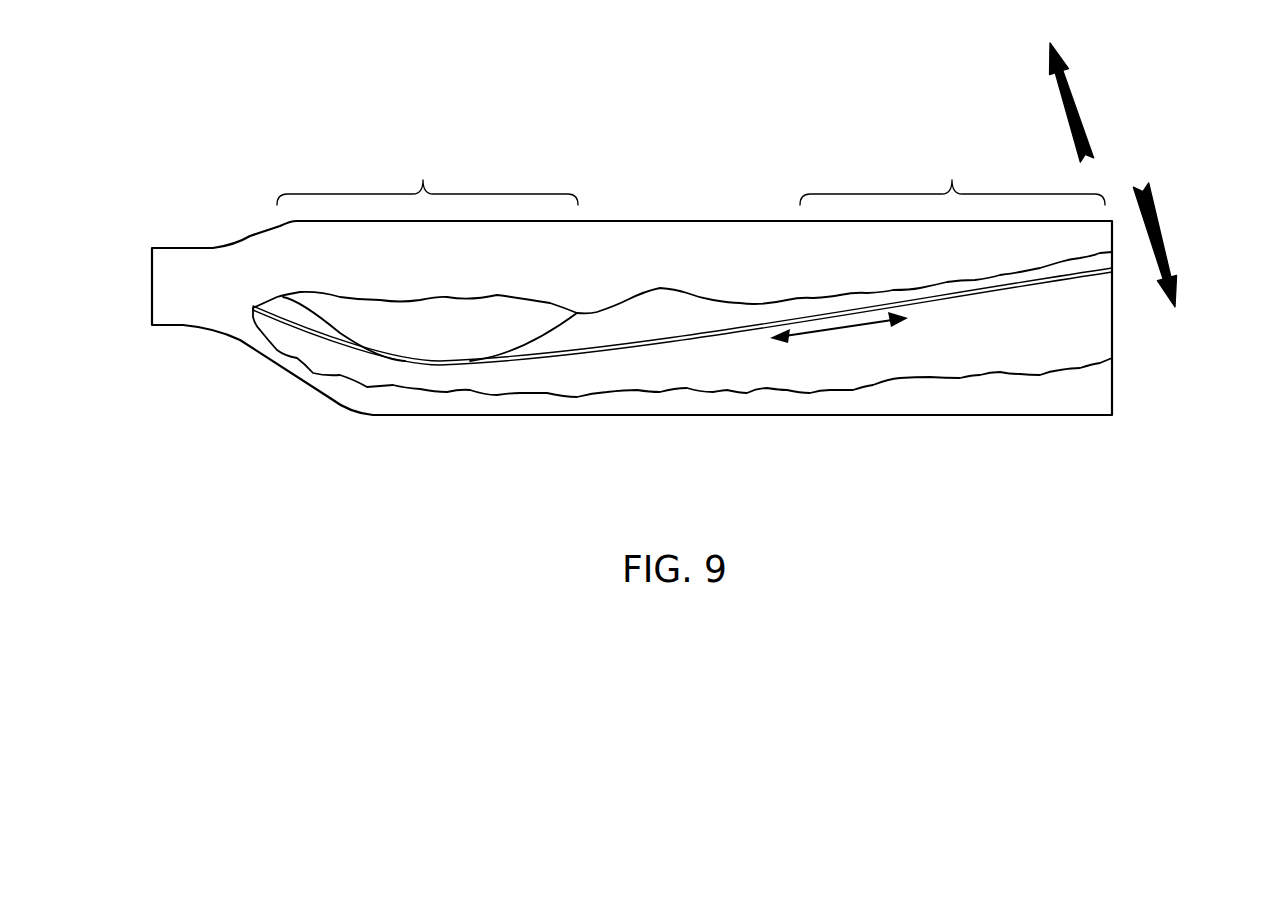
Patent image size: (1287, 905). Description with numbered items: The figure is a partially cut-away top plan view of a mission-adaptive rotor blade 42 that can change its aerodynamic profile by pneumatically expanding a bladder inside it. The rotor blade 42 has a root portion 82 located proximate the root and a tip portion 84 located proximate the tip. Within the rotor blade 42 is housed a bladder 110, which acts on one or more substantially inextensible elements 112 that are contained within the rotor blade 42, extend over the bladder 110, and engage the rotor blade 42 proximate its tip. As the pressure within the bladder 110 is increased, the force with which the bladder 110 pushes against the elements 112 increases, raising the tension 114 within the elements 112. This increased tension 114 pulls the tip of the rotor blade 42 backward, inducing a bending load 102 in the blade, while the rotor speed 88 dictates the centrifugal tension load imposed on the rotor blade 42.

The rotor blade 42 is at (628, 237).
The root portion 82 is at (423, 180).
The tip portion 84 is at (952, 180).
The rotor speed 88 is at (1078, 98).
The bending load 102 is at (1162, 222).
The bladder 110 is at (433, 327).
The substantially inextensible element 112 is at (653, 342).
The tension 114 is at (840, 330).